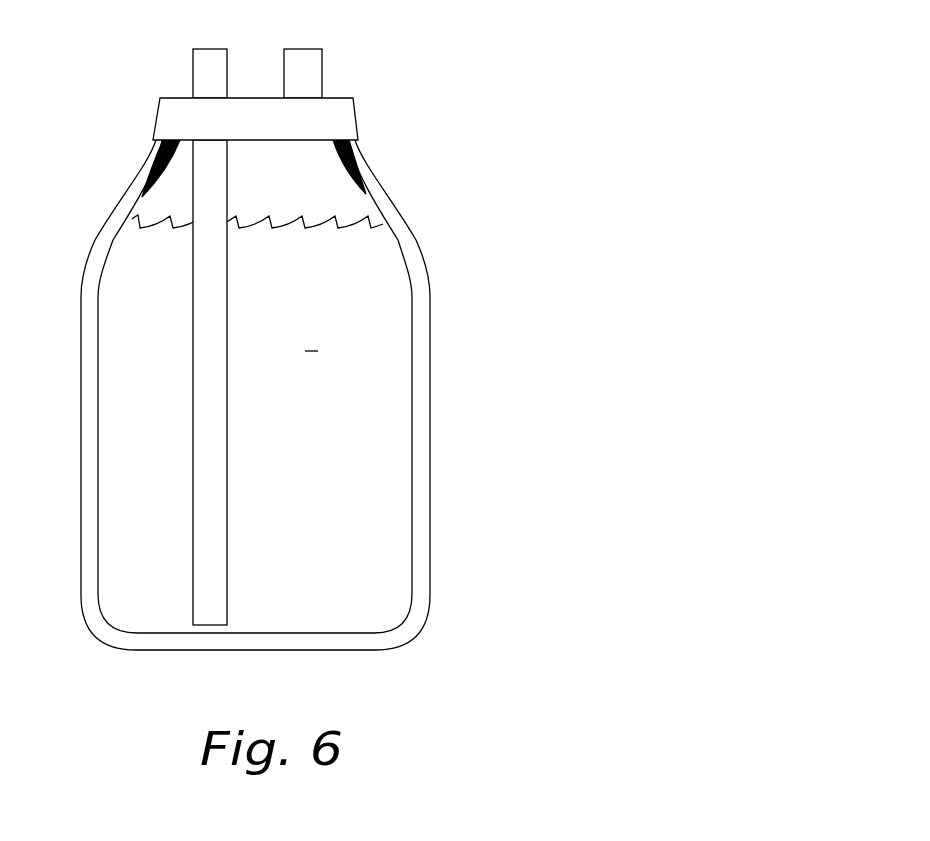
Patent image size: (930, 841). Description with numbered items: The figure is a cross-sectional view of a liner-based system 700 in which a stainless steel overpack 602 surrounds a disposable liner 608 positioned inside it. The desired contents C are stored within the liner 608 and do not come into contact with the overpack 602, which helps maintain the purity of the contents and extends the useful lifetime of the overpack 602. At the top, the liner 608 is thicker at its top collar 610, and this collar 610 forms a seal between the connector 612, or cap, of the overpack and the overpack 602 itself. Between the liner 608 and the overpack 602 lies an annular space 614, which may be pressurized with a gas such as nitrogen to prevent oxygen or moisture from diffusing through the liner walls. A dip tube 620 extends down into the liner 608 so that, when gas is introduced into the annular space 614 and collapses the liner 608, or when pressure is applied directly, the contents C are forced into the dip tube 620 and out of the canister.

The liner-based system 700 is at (308, 345).
The overpack 602 is at (431, 522).
The liner 608 is at (413, 318).
The top collar 610 is at (353, 153).
The connector 612 is at (356, 103).
The annular space 614 is at (90, 401).
The dip tube 620 is at (205, 313).